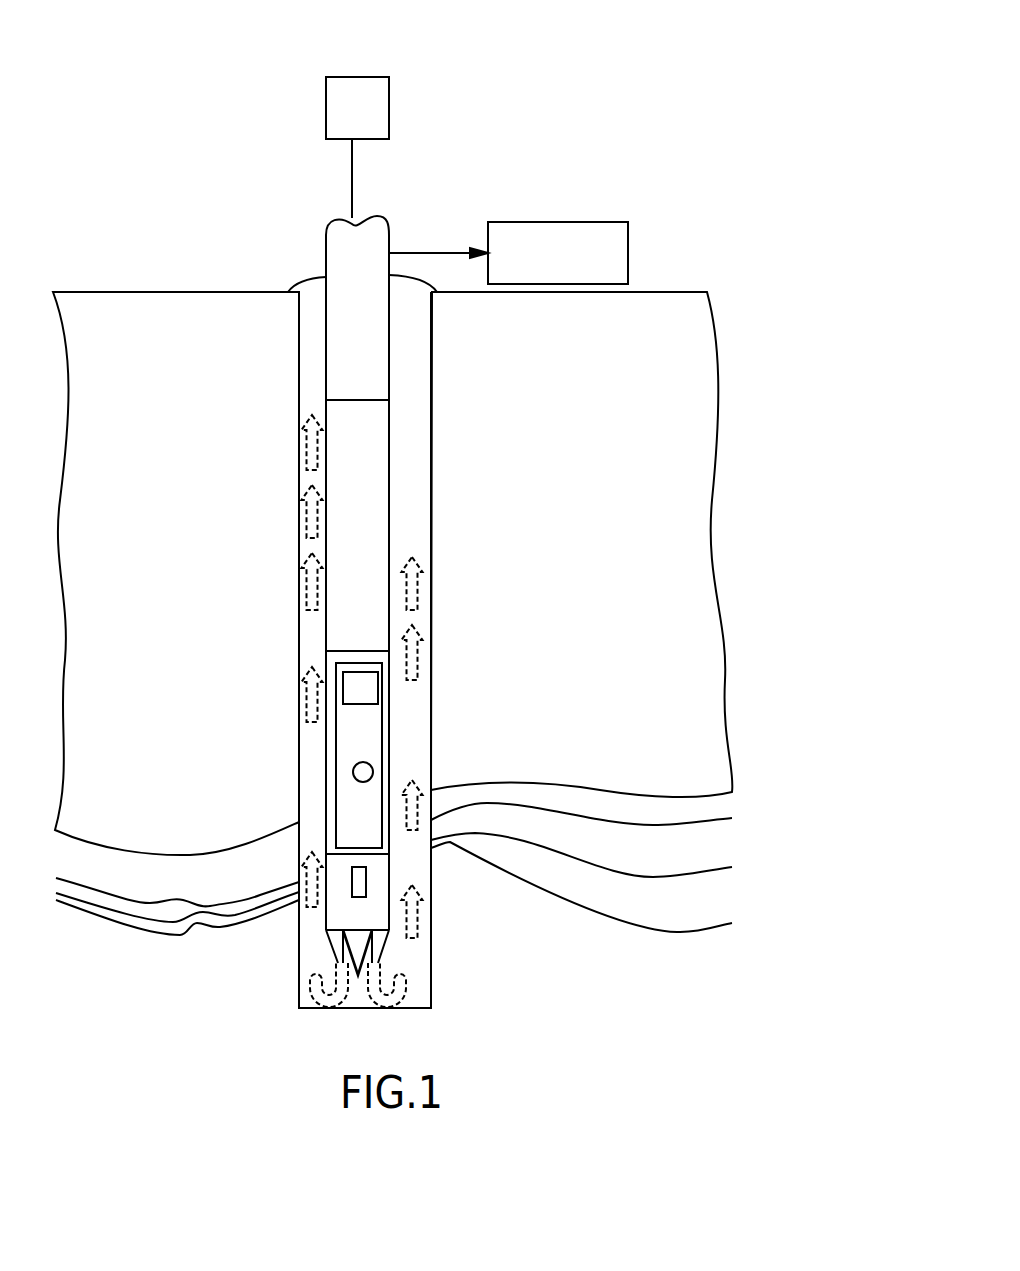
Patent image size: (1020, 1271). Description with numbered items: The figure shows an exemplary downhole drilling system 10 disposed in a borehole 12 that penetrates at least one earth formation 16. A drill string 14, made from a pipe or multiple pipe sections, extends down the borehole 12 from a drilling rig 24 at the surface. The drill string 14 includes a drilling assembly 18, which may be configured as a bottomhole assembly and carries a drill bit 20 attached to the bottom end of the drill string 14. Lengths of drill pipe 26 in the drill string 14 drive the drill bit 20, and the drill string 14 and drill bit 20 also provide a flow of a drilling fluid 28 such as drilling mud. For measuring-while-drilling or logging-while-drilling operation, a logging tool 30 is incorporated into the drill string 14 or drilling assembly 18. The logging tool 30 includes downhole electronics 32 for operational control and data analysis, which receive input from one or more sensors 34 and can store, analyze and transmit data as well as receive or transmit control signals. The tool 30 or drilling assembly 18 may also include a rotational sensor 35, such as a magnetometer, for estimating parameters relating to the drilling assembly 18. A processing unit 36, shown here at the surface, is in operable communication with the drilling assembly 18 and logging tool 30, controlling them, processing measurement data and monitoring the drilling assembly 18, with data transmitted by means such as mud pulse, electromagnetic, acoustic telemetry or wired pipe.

The downhole drilling system 10 is at (707, 108).
The borehole 12 is at (312, 297).
The drill string 14 is at (325, 238).
The earth formation 16 is at (120, 322).
The drilling assembly 18 is at (400, 920).
The drill bit 20 is at (337, 945).
The drilling rig 24 is at (389, 108).
The drill pipe 26 is at (382, 483).
The drilling fluid 28 is at (405, 997).
The logging tool 30 is at (336, 798).
The downhole electronics 32 is at (358, 682).
The sensors 34 is at (373, 768).
The rotational sensor 35 is at (367, 882).
The processing unit 36 is at (558, 222).